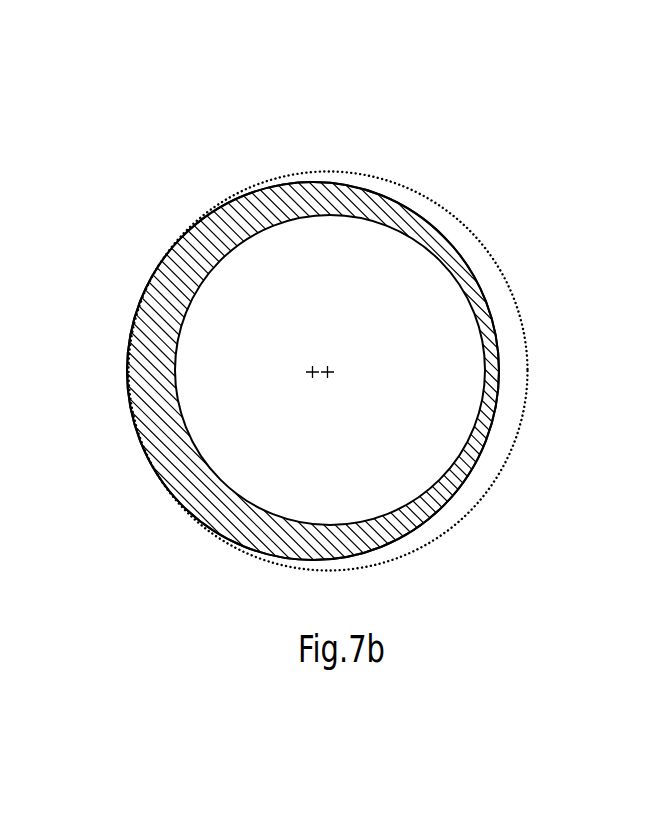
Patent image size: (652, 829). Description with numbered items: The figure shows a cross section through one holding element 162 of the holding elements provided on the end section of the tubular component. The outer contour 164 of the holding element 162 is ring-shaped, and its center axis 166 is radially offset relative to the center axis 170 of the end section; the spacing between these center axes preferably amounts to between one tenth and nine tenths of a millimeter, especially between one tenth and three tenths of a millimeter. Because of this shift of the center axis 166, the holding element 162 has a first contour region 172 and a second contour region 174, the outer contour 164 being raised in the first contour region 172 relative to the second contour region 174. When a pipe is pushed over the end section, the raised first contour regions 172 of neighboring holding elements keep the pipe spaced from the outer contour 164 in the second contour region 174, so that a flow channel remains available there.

The holding element 162 is at (428, 160).
The outer contour 164 is at (168, 252).
The center axis 166 is at (303, 381).
The center axis of the end section 170 is at (336, 362).
The first contour region 172 is at (125, 393).
The second contour region 174 is at (499, 348).